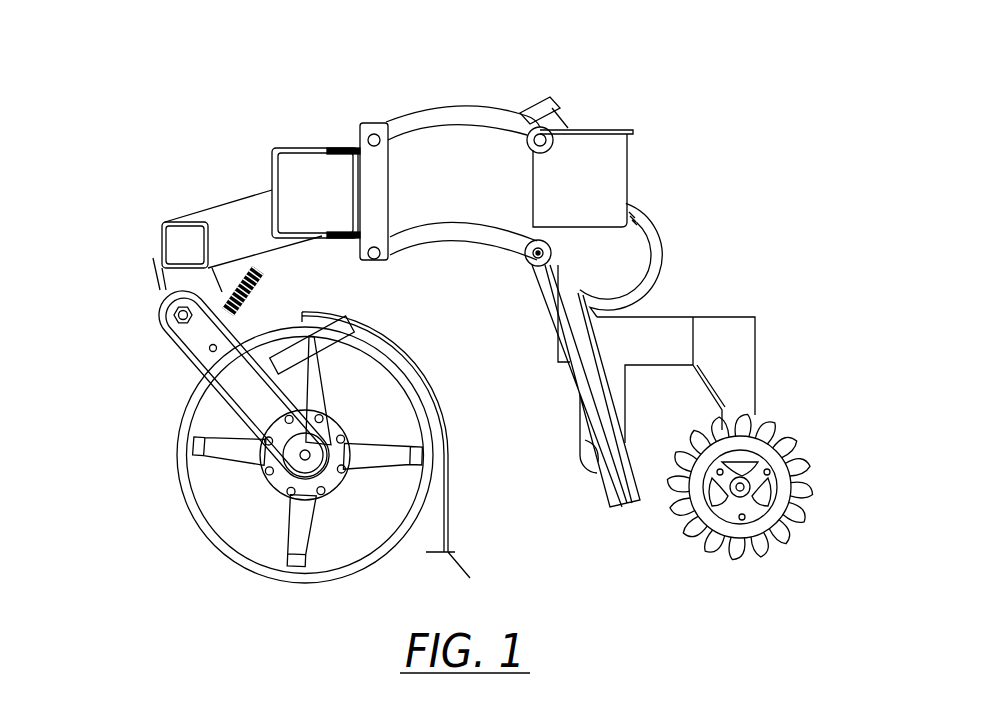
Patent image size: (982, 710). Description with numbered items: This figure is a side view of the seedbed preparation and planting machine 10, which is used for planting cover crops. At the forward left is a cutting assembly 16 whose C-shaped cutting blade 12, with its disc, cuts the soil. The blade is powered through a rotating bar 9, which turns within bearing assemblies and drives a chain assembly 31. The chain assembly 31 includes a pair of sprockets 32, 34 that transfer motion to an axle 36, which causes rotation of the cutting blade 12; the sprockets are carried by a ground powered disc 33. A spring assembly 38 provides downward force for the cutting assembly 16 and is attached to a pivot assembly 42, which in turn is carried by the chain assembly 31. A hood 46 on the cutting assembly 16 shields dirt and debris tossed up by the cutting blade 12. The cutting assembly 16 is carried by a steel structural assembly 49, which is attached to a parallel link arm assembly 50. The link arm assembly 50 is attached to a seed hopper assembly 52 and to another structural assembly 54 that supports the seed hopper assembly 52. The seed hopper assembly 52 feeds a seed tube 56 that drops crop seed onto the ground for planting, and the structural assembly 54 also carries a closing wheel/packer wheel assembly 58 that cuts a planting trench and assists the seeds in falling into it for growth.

The machine 10 is at (128, 178).
The structural assembly 49 is at (253, 208).
The rotating bar 9 is at (173, 303).
The spring assembly 38 is at (256, 297).
The chain assembly 31 is at (227, 409).
The pivot assembly 42 is at (236, 381).
The sprocket 32 is at (178, 315).
The cutting assembly 16 is at (156, 401).
The ground powered disc 33 is at (248, 535).
The cutting blade 12 is at (302, 540).
The sprocket 34 is at (268, 460).
The axle 36 is at (309, 454).
The hood 46 is at (382, 333).
The parallel link arm assembly 50 is at (450, 113).
The seed hopper assembly 52 is at (590, 187).
The structural assembly 54 is at (663, 333).
The seed tube 56 is at (607, 489).
The closing wheel/packer wheel assembly 58 is at (783, 438).